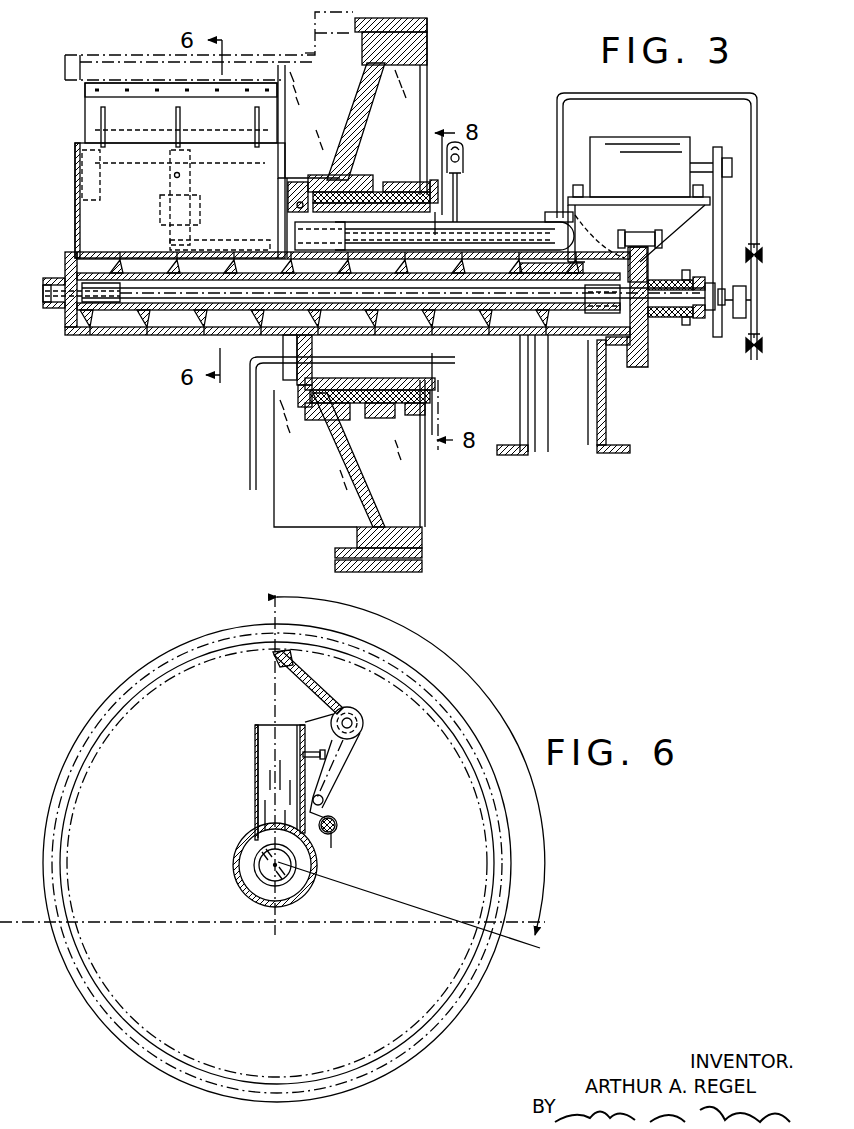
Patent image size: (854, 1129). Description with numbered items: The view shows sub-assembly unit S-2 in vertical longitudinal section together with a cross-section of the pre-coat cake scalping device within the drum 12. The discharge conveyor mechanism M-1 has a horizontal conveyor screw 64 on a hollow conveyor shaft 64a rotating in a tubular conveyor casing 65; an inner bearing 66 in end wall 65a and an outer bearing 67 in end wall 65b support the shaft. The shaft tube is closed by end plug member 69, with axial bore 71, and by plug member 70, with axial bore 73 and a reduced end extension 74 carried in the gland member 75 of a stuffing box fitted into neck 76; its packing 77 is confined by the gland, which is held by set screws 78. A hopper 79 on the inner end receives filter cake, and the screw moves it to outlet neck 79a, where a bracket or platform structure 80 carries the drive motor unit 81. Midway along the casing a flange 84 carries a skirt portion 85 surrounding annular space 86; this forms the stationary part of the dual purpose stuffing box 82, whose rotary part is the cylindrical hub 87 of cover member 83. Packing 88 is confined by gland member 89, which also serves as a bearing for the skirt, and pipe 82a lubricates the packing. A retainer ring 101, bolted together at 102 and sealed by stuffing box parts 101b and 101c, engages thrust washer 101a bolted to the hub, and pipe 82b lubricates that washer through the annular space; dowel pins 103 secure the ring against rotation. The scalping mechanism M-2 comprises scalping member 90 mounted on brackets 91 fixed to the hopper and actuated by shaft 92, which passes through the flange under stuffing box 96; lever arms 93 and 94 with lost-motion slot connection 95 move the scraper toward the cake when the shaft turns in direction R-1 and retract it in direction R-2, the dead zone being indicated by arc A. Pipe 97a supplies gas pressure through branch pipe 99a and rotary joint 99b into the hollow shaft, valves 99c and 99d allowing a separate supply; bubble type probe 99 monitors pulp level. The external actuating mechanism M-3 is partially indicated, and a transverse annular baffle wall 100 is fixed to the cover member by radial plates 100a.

In FIG. 3, the conveyor 12 is at (145, 55).
In FIG. 6, the conveyor 12 is at (78, 782).
In FIG. 3, the radial plates 100a is at (286, 33).
In FIG. 3, the sub-assembly unit S-2 is at (483, 75).
In FIG. 3, the transverse annular baffle wall 100 is at (286, 112).
In FIG. 3, the cover member 83 is at (375, 105).
In FIG. 3, the bolted joint of retainer ring 102 is at (295, 178).
In FIG. 3, the dual purpose stuffing box 82 is at (415, 180).
In FIG. 3, the bearing 101b is at (340, 190).
In FIG. 3, the retainer ring 101 is at (300, 190).
In FIG. 3, the bearing block 101c is at (290, 200).
In FIG. 3, the stuffing box 96 is at (298, 208).
In FIG. 3, the horizontal shaft 92 is at (228, 245).
In FIG. 6, the horizontal shaft 92 is at (327, 808).
In FIG. 3, the pipe 82a is at (490, 215).
In FIG. 3, the external actuating mechanism M-3 is at (480, 172).
In FIG. 3, the pipe 97a is at (493, 225).
In FIG. 3, the thrust washer 101a is at (328, 236).
In FIG. 3, the branch pipe 99a is at (745, 92).
In FIG. 3, the valve 99c is at (763, 252).
In FIG. 3, the valve 99d is at (764, 347).
In FIG. 3, the rotary joint 99b is at (740, 320).
In FIG. 3, the drive motor unit 81 is at (650, 171).
In FIG. 3, the gland member 75 is at (723, 270).
In FIG. 3, the bracket or platform structure 80 is at (590, 245).
In FIG. 3, the tubular conveyor casing 65 is at (135, 338).
In FIG. 6, the tubular conveyor casing 65 is at (256, 876).
In FIG. 3, the horizontal conveyor screw 64 is at (125, 333).
In FIG. 6, the horizontal conveyor screw 64 is at (262, 890).
In FIG. 3, the end plug member 69 is at (100, 283).
In FIG. 3, the inner bearing 66 is at (52, 280).
In FIG. 3, the axial bore 71 is at (43, 300).
In FIG. 3, the end wall 65a is at (68, 332).
In FIG. 3, the discharge conveyor mechanism M-1 is at (180, 340).
In FIG. 3, the end wall 65b is at (648, 360).
In FIG. 3, the outer bearing 67 is at (680, 320).
In FIG. 3, the packing 77 is at (660, 280).
In FIG. 3, the set screws 78 is at (680, 278).
In FIG. 3, the reduced end extension 74 is at (708, 312).
In FIG. 3, the neck 76 is at (718, 300).
In FIG. 3, the axial bore 73 is at (585, 312).
In FIG. 3, the plug member 70 is at (600, 315).
In FIG. 3, the outlet neck 79a is at (607, 414).
In FIG. 3, the hollow conveyor shaft 64a is at (550, 335).
In FIG. 6, the hollow conveyor shaft 64a is at (255, 864).
In FIG. 3, the annular space 86 is at (352, 412).
In FIG. 3, the bubble type probe 99 is at (250, 408).
In FIG. 3, the annular member or flange 84 is at (297, 346).
In FIG. 3, the packing 88 is at (365, 378).
In FIG. 3, the skirt portion 85 is at (425, 385).
In FIG. 3, the bearing 103 is at (298, 398).
In FIG. 3, the cylindrical hub 87 is at (355, 408).
In FIG. 3, the pipe 82b is at (435, 378).
In FIG. 3, the gland member 89 is at (436, 423).
In FIG. 3, the hopper 79 is at (75, 158).
In FIG. 6, the hopper 79 is at (255, 748).
In FIG. 3, the scraper blade or scalping member 90 is at (95, 110).
In FIG. 6, the scraper blade or scalping member 90 is at (300, 676).
In FIG. 3, the filter cake scalping mechanism M-2 is at (206, 111).
In FIG. 6, the filter cake scalping mechanism M-2 is at (372, 820).
In FIG. 6, the arc A is at (411, 766).
In FIG. 6, the brackets 91 is at (318, 715).
In FIG. 6, the lever arm 94 is at (345, 752).
In FIG. 6, the lost-motion slot connection 95 is at (324, 805).
In FIG. 6, the lever arm 93 is at (335, 828).
In FIG. 6, the arrow R-2 is at (300, 808).
In FIG. 6, the arrow R-1 is at (345, 808).